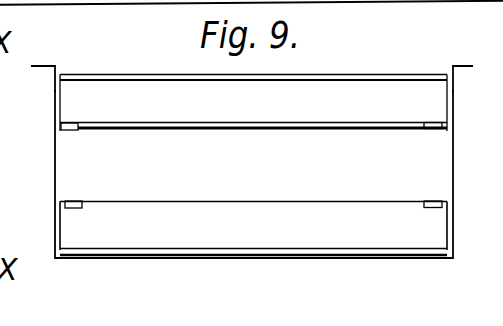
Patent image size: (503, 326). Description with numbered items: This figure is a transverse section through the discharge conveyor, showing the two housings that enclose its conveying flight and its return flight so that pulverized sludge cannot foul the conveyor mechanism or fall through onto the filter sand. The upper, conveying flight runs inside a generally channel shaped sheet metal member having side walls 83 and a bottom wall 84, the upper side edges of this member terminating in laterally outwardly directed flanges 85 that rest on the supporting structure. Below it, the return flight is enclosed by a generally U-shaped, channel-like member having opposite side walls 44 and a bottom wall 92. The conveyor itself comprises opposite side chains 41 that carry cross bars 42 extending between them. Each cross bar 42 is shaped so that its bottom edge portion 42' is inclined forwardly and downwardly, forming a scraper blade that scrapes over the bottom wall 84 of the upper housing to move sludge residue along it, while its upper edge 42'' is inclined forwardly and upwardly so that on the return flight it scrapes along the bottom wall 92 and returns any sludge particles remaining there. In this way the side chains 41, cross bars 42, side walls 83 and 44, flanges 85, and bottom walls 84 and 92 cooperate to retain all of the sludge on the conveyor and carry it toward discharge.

The side chains 41 is at (75, 200).
The cross bars 42 is at (253, 139).
The bottom edge portion 42' is at (253, 190).
The upper edge 42'' is at (253, 159).
The side walls 44 is at (55, 170).
The side walls 83 is at (55, 98).
The bottom wall 84 is at (77, 130).
The flanges 85 is at (47, 66).
The bottom wall 92 is at (236, 250).